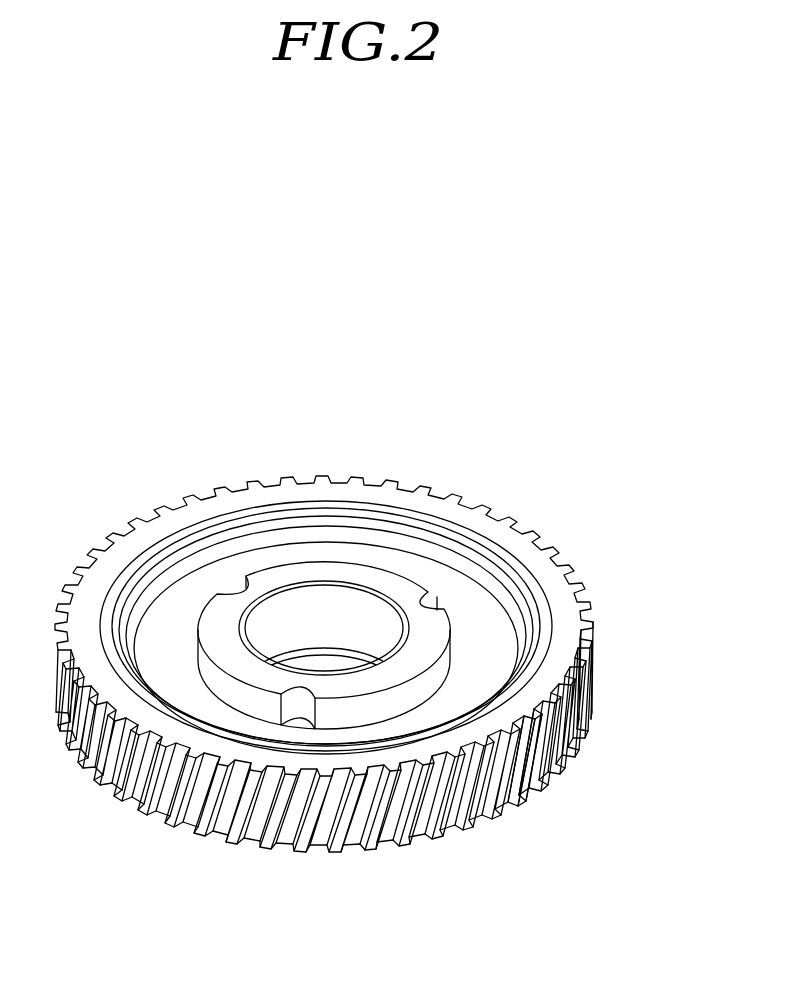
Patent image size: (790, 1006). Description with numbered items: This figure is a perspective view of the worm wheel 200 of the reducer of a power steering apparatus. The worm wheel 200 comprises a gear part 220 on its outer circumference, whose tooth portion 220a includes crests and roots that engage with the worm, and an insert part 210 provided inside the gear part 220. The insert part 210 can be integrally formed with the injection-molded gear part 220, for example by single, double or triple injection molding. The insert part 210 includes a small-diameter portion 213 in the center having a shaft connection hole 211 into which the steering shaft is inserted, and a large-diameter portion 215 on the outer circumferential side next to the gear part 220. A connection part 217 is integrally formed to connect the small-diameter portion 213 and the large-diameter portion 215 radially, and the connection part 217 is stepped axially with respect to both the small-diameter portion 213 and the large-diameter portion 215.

The worm wheel 200 is at (96, 330).
The insert part 210 is at (470, 403).
The shaft connection hole 211 is at (290, 607).
The small-diameter portion 213 is at (335, 565).
The large-diameter portion 215 is at (161, 557).
The connection part 217 is at (462, 590).
The gear part 220 is at (560, 647).
The tooth portion 220a is at (533, 712).